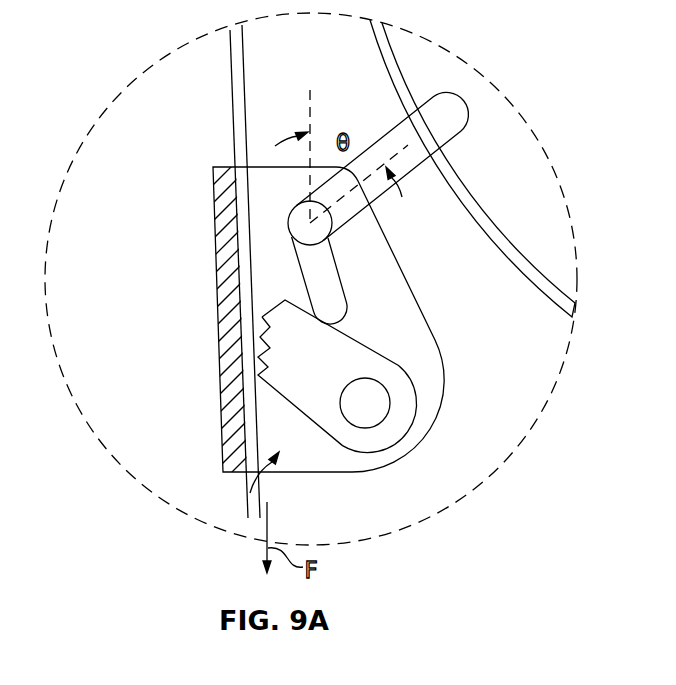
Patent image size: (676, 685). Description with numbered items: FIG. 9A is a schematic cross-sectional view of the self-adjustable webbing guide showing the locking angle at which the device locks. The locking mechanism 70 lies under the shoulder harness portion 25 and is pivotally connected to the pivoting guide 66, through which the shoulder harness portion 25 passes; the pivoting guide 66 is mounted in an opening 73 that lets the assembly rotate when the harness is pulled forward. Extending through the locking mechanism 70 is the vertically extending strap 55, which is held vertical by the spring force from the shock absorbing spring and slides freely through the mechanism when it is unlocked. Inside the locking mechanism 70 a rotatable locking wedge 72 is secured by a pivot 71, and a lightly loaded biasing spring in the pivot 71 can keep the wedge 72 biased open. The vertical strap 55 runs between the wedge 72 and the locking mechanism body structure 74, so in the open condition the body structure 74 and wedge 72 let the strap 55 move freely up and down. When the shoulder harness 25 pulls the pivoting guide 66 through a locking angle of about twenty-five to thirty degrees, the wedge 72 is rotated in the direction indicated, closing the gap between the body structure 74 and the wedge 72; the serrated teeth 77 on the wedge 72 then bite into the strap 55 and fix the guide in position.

The shoulder harness portion 25 is at (476, 197).
The vertically extending strap 55 is at (233, 123).
The pivoting guide 66 is at (452, 113).
The locking mechanism 70 is at (250, 493).
The pivot 71 is at (368, 417).
The locking wedge 72 is at (405, 388).
The opening 73 is at (318, 278).
The locking mechanism body structure 74 is at (213, 185).
The teeth 77 is at (262, 338).